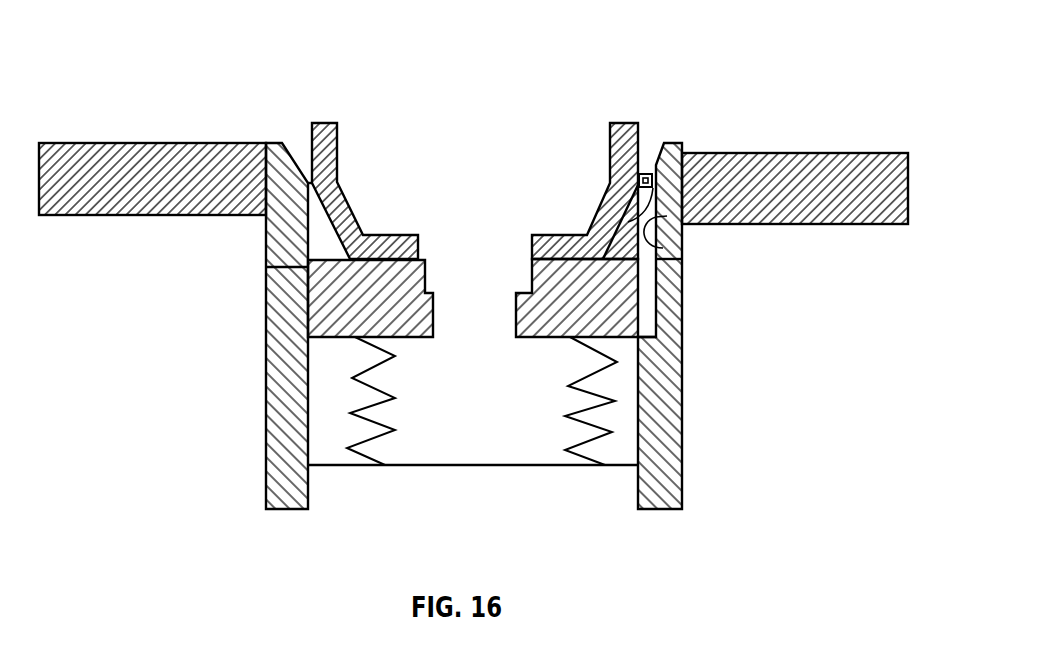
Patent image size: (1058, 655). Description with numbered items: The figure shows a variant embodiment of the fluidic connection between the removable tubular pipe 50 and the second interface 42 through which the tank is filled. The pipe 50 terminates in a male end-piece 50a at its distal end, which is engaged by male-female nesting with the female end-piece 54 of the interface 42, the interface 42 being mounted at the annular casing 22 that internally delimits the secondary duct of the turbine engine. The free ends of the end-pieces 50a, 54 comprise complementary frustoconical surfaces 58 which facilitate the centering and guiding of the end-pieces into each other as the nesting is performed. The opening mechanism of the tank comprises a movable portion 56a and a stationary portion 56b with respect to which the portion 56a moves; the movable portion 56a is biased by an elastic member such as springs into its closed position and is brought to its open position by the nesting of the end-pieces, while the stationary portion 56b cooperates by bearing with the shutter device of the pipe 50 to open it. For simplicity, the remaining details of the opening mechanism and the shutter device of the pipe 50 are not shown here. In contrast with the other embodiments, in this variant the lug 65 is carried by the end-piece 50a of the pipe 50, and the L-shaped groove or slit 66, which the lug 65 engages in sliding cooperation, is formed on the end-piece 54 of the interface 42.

The annular casing 22 is at (796, 153).
The second interface 42 is at (296, 520).
The removable tubular pipe 50 is at (343, 119).
The male end-piece 50a is at (623, 158).
The female end-piece 54 is at (673, 483).
The movable portion 56a is at (320, 303).
The stationary portion 56b is at (670, 409).
The complementary frustoconical surfaces 58 is at (653, 173).
The lug 65 is at (639, 182).
The L-shaped groove or slit 66 is at (663, 248).